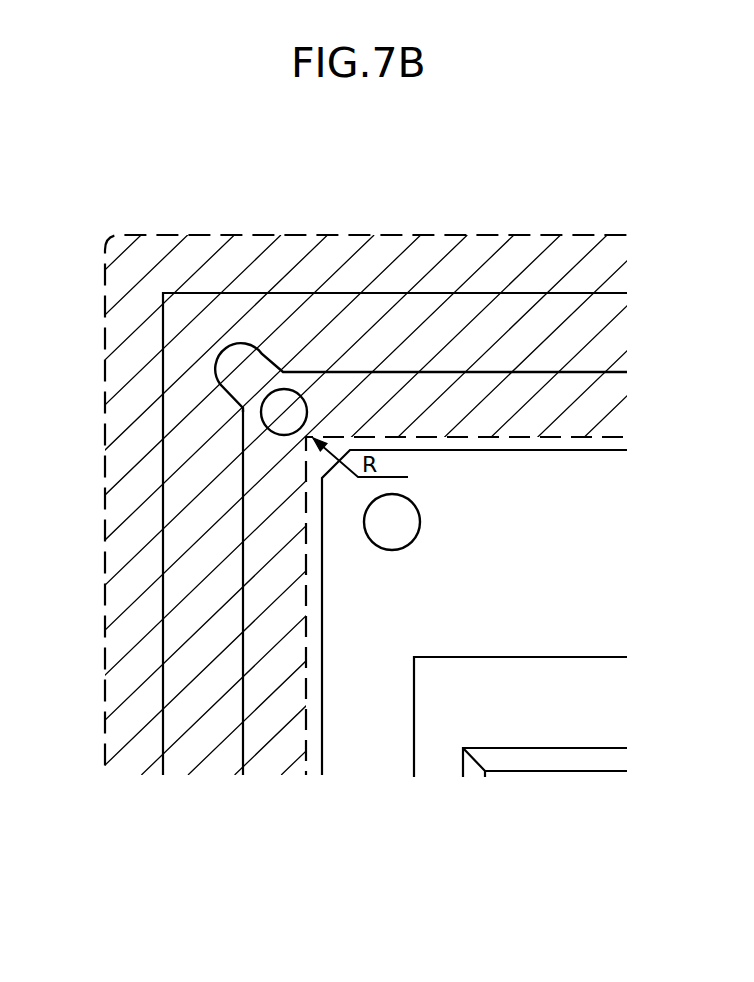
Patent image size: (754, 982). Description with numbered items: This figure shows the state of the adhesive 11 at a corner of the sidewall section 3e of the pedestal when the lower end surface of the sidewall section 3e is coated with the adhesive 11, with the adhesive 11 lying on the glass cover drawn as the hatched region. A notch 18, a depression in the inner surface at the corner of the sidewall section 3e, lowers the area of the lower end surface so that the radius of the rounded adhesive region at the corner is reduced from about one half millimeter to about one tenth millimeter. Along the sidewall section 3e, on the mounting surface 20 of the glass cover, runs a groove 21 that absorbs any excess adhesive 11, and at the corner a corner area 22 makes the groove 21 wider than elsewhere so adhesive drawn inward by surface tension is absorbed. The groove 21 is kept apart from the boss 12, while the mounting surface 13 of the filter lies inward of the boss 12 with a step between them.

The adhesive 11 is at (193, 250).
The sidewall section 3e is at (176, 733).
The notch 18 is at (243, 370).
The corner area (surface C) 22 is at (346, 457).
The groove 21 is at (320, 793).
The boss 12 is at (392, 527).
The mounting surface of the filter 13 is at (542, 708).
The mounting surface of the glass cover 20 is at (697, 525).